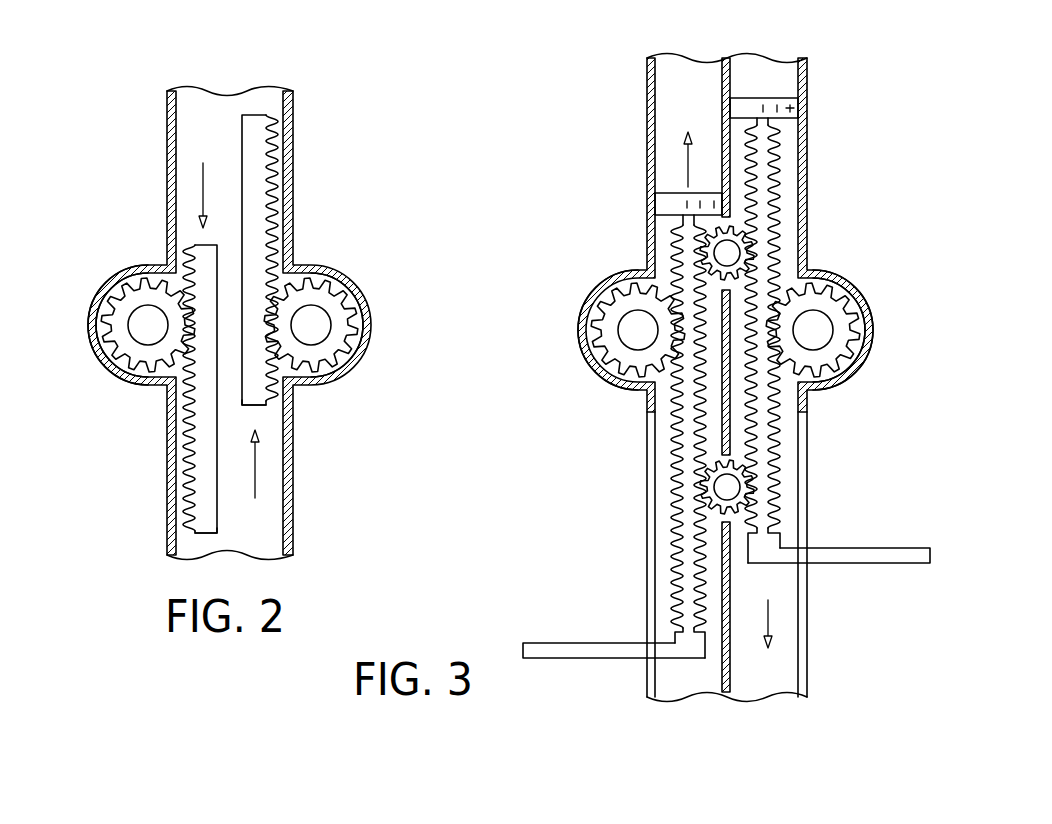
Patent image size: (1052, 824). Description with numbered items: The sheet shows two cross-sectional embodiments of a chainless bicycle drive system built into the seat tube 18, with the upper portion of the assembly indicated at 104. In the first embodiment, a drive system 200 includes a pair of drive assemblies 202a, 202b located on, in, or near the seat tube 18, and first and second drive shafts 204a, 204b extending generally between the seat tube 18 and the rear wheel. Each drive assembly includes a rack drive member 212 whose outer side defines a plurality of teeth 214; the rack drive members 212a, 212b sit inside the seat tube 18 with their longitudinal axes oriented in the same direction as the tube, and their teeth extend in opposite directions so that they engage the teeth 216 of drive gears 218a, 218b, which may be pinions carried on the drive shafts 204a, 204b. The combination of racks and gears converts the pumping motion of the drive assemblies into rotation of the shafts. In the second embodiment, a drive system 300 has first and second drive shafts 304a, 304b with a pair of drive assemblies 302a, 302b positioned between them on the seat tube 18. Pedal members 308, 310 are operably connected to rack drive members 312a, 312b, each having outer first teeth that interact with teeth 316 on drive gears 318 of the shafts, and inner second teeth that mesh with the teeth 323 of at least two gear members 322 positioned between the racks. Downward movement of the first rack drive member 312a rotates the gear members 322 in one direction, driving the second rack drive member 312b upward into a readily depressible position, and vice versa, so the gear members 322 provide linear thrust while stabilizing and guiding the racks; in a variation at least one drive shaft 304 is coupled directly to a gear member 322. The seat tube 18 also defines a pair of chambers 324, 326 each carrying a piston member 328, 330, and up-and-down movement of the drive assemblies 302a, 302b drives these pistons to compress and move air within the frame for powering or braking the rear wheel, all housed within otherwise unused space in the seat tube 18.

In FIG. 2, the seat tube 18 is at (164, 110).
In FIG. 3, the seat tube 18 is at (644, 92).
In FIG. 2, the delivery device 104 is at (238, 9).
In FIG. 2, the drive system 200 is at (316, 93).
In FIG. 2, the drive assembly 202a is at (160, 446).
In FIG. 2, the drive assembly 202b is at (228, 108).
In FIG. 2, the first drive shaft 204a is at (152, 262).
In FIG. 2, the second drive shaft 204b is at (334, 391).
In FIG. 2, the rack drive member 212 is at (183, 500).
In FIG. 2, the rack drive member 212a is at (192, 536).
In FIG. 2, the rack drive member 212b is at (260, 410).
In FIG. 2, the teeth 214 is at (281, 152).
In FIG. 2, the teeth 216 is at (118, 352).
In FIG. 2, the drive gear 218a is at (124, 264).
In FIG. 2, the drive gear 218b is at (323, 263).
In FIG. 3, the drive system 300 is at (615, 133).
In FIG. 3, the drive assembly 302a is at (630, 415).
In FIG. 3, the drive assembly 302b is at (810, 142).
In FIG. 3, the drive shaft 304 is at (872, 358).
In FIG. 3, the first drive shaft 304a is at (605, 268).
In FIG. 3, the second drive shaft 304b is at (880, 310).
In FIG. 3, the pedal member 308 is at (532, 648).
In FIG. 3, the pedal member 310 is at (850, 553).
In FIG. 3, the first rack drive member 312a is at (680, 535).
In FIG. 3, the second rack drive member 312b is at (778, 198).
In FIG. 3, the teeth 316 is at (608, 320).
In FIG. 3, the drive gear 318 is at (824, 358).
In FIG. 3, the gear member 322 is at (746, 253).
In FIG. 3, the teeth 323 is at (752, 465).
In FIG. 3, the chamber 324 is at (688, 108).
In FIG. 3, the chamber 326 is at (764, 86).
In FIG. 3, the piston member 328 is at (665, 205).
In FIG. 3, the piston member 330 is at (800, 108).